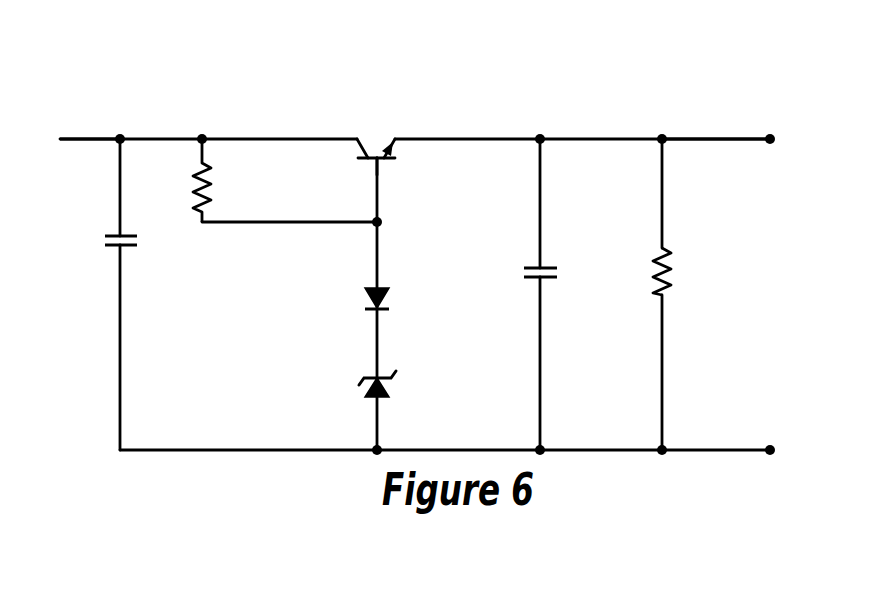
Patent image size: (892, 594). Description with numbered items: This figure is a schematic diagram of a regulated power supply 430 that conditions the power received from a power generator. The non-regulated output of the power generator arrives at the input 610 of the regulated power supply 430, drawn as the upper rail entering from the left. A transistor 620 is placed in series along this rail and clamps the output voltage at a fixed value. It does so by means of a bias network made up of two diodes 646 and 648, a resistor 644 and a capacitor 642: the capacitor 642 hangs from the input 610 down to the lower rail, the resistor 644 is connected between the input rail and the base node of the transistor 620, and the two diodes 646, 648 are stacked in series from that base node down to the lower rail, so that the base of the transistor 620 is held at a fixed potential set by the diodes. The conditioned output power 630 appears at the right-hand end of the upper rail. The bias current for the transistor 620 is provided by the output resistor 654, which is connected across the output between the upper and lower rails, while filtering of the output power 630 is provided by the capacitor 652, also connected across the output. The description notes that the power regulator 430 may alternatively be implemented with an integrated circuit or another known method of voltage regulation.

The regulated power supply 430 is at (586, 82).
The input 610 is at (84, 139).
The transistor 620 is at (380, 145).
The output power 630 is at (726, 139).
The capacitor 642 is at (112, 234).
The resistor 644 is at (214, 188).
The diode 646 is at (391, 300).
The diode 648 is at (391, 395).
The capacitor 652 is at (533, 266).
The output resistor 654 is at (670, 275).